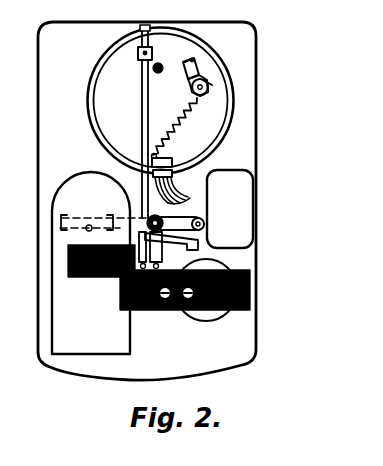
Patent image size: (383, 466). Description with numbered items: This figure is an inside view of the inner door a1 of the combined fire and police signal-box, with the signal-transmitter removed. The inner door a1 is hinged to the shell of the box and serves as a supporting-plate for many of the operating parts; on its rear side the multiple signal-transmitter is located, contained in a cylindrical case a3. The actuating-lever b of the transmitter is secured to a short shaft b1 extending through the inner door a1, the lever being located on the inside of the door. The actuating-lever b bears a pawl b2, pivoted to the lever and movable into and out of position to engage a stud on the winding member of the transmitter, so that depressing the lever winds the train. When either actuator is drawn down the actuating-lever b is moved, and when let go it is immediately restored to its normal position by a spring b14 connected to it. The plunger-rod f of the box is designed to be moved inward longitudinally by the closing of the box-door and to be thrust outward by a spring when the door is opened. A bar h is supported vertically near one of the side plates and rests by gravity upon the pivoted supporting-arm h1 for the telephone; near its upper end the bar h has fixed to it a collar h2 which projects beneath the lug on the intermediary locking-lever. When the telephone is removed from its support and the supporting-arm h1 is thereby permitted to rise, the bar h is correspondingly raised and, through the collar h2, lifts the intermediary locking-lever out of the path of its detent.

The inner door a1 is at (240, 155).
The cylindrical case a3 is at (234, 110).
The actuating-lever b is at (186, 84).
The short shaft b1 is at (213, 84).
The pawl b2 is at (190, 60).
The spring b14 is at (180, 128).
The plunger-rod f is at (159, 64).
The bar h is at (143, 115).
The pivoted supporting-arm h1 is at (195, 216).
The collar h2 is at (131, 66).